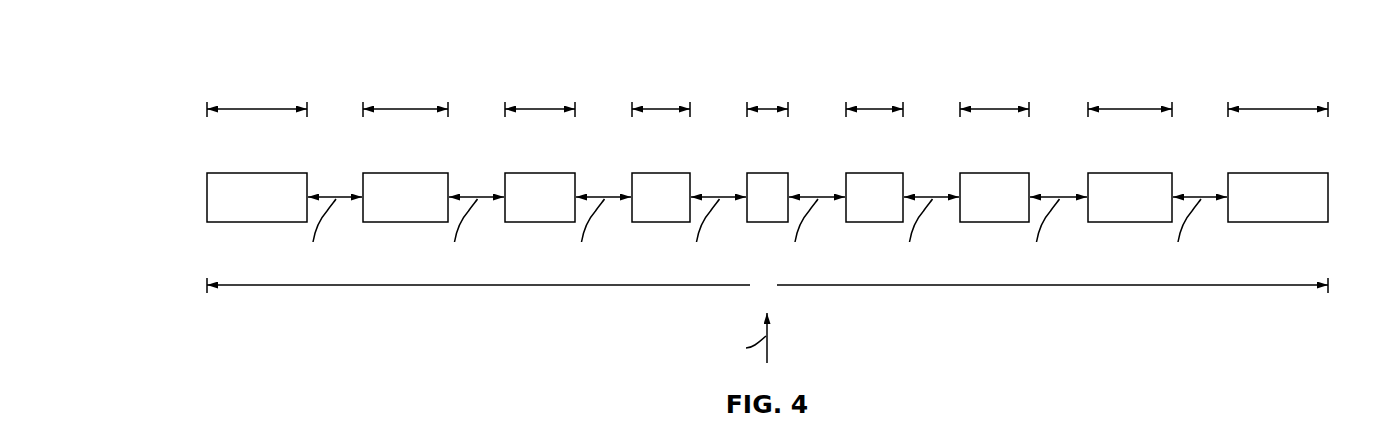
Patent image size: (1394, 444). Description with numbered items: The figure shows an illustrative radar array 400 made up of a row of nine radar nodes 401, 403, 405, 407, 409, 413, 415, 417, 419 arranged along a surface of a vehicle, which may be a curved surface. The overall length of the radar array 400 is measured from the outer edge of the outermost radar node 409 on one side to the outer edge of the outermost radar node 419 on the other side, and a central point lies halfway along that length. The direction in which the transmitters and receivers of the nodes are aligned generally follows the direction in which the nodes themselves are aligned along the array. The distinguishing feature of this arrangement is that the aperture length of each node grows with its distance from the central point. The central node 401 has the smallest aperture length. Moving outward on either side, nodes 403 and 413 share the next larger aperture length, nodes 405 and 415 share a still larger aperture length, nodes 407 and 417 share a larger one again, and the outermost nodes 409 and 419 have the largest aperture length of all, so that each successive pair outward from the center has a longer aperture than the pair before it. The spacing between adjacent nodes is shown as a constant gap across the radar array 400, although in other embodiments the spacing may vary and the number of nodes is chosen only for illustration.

The radar array 400 is at (136, 34).
The central node 401 is at (757, 173).
The radar node 403 is at (650, 173).
The radar node 405 is at (527, 173).
The radar node 407 is at (385, 173).
The outermost radar node 409 is at (237, 173).
The radar node 413 is at (866, 173).
The radar node 415 is at (980, 173).
The radar node 417 is at (1108, 173).
The outermost radar node 419 is at (1252, 173).